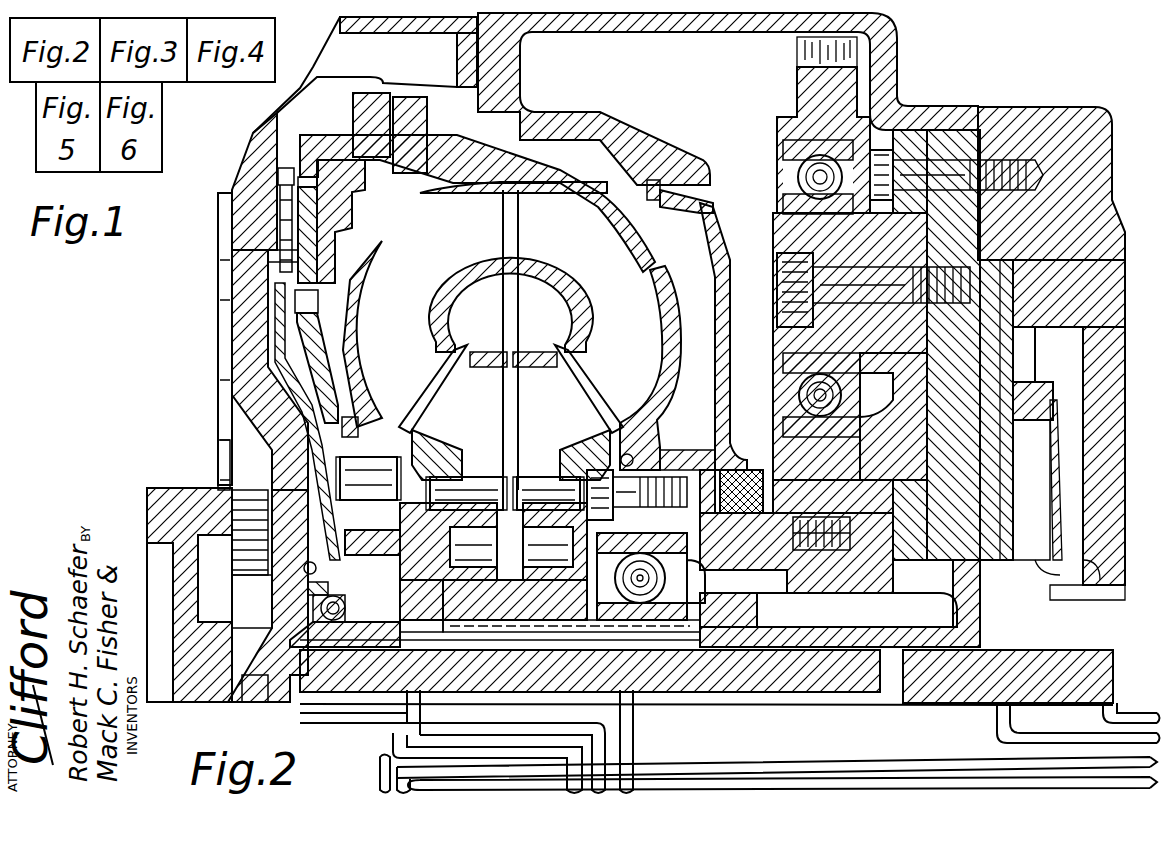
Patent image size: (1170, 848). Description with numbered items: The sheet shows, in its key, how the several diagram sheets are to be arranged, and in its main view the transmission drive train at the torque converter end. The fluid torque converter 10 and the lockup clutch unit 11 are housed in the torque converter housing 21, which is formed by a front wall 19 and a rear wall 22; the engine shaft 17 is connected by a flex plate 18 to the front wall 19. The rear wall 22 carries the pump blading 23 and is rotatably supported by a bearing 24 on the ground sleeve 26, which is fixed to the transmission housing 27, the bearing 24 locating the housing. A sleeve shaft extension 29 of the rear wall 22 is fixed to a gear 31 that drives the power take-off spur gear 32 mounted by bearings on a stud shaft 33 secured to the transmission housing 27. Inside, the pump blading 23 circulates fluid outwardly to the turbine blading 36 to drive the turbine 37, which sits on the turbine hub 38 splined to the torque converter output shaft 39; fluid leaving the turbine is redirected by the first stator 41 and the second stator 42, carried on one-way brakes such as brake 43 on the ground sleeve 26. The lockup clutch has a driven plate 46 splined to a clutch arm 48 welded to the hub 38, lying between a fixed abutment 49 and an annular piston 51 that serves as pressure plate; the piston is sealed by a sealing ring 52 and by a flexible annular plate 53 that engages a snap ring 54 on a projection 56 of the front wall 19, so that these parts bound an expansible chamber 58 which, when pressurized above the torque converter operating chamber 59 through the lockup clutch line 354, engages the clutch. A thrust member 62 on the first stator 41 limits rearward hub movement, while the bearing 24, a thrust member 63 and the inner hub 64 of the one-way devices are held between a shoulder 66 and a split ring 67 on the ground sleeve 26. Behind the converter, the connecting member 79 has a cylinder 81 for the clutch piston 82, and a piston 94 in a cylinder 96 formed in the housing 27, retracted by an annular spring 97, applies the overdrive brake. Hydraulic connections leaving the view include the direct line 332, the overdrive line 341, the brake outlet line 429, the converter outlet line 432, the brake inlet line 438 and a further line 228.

The fluid torque converter 10 is at (535, 103).
The lockup clutch unit 11 is at (222, 244).
The engine shaft 17 is at (200, 497).
The flex plate 18 is at (226, 382).
The front wall 19 is at (250, 165).
The torque converter housing 21 is at (368, 122).
The rear wall 22 is at (576, 192).
The pump blading 23 is at (637, 268).
The bearing 24 is at (520, 575).
The ground sleeve 26 is at (770, 590).
The transmission housing 27 is at (1066, 125).
The sleeve shaft extension 29 is at (763, 515).
The gear 31 is at (843, 525).
The power take-off spur gear 32 is at (803, 108).
The stud shaft 33 is at (775, 218).
The turbine blading 36 is at (452, 283).
The turbine 37 is at (445, 195).
The turbine hub 38 is at (336, 565).
The torque converter output shaft 39 is at (790, 705).
The first stator 41 is at (440, 405).
The second stator 42 is at (568, 402).
The one-way brake 43 is at (486, 562).
The driven plate 46 is at (328, 230).
The clutch arm 48 is at (322, 336).
The fixed abutment 49 is at (345, 212).
The annular piston 51 is at (280, 262).
The sealing ring 52 is at (290, 170).
The flexible annular plate 53 is at (290, 318).
The snap ring 54 is at (305, 558).
The projection 56 is at (322, 605).
The expansible chamber 58 is at (300, 428).
The torque converter operating chamber 59 is at (360, 290).
The thrust member 62 is at (430, 520).
The thrust member 63 is at (555, 612).
The inner hub 64 is at (565, 548).
The shoulder 66 is at (757, 602).
The split ring 67 is at (455, 612).
The connecting member 79 is at (1093, 508).
The cylinder 81 is at (1110, 425).
The clutch piston 82 is at (1113, 388).
The piston 94 is at (1045, 398).
The cylinder 96 is at (1024, 337).
The annular spring 97 is at (1052, 495).
The pipe 228 is at (648, 720).
The direct line 332 is at (1103, 712).
The overdrive line 341 is at (997, 712).
The lockup clutch line 354 is at (300, 712).
The brake outlet line 429 is at (848, 780).
The converter outlet line 432 is at (620, 750).
The brake inlet line 438 is at (382, 748).